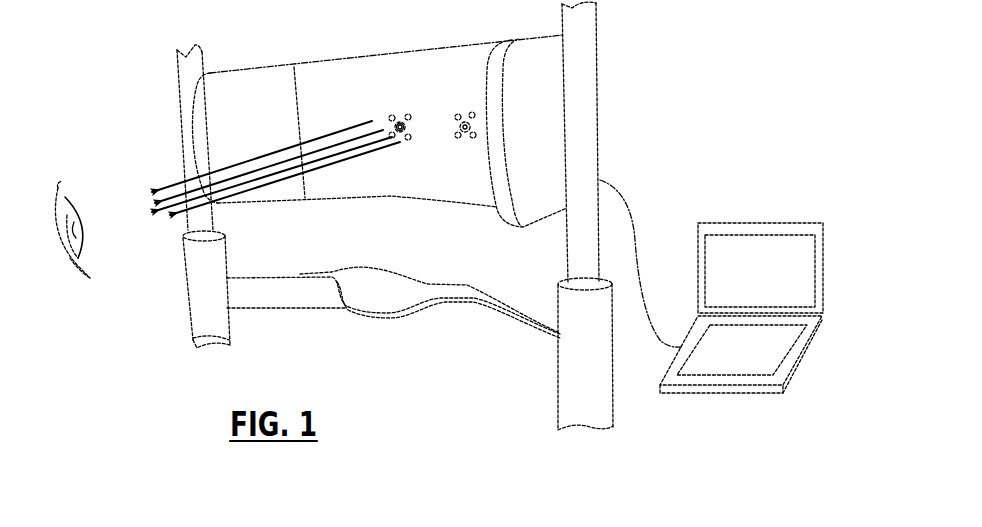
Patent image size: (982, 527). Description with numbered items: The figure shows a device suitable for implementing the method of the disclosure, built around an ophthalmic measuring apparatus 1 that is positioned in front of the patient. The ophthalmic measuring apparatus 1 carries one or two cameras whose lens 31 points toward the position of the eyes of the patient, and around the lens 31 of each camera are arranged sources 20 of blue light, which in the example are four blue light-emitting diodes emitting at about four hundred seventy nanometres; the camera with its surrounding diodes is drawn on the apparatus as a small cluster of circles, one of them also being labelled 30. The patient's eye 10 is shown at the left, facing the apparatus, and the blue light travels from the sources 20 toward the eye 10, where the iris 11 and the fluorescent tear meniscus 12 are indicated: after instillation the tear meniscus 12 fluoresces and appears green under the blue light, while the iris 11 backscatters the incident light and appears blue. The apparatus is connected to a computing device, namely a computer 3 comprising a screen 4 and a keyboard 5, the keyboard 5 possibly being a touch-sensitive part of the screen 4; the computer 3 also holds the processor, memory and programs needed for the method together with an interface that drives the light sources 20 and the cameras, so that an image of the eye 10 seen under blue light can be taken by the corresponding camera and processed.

The ophthalmic measuring apparatus 1 is at (555, 110).
The computer 3 is at (765, 315).
The screen 4 is at (800, 258).
The keyboard 5 is at (773, 340).
The eye 10 is at (67, 203).
The iris 11 is at (77, 238).
The fluorescent tear meniscus 12 is at (78, 263).
The sources of blue light 20 is at (390, 118).
The sensor unit 30 is at (397, 114).
The lens 31 is at (398, 142).